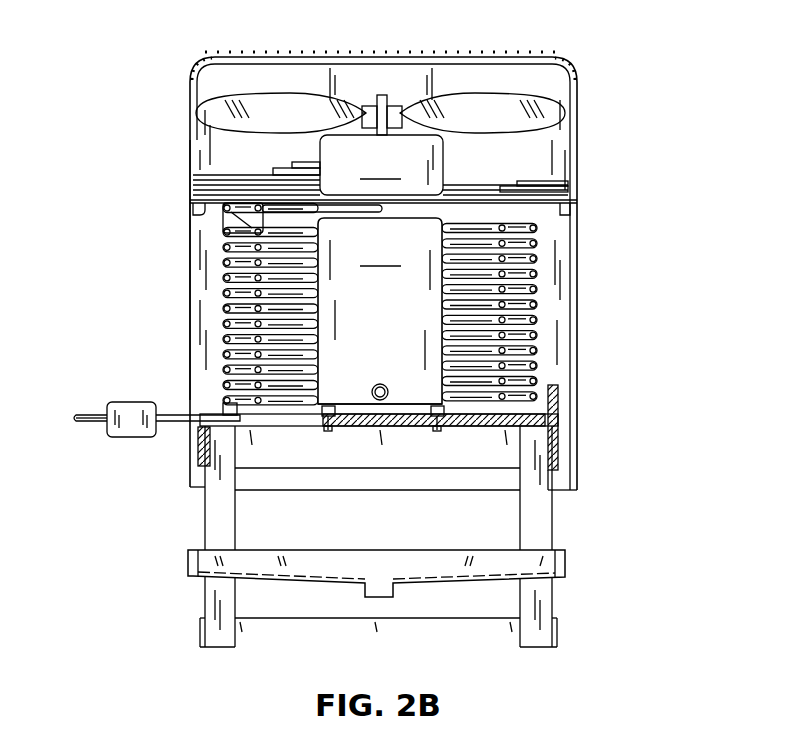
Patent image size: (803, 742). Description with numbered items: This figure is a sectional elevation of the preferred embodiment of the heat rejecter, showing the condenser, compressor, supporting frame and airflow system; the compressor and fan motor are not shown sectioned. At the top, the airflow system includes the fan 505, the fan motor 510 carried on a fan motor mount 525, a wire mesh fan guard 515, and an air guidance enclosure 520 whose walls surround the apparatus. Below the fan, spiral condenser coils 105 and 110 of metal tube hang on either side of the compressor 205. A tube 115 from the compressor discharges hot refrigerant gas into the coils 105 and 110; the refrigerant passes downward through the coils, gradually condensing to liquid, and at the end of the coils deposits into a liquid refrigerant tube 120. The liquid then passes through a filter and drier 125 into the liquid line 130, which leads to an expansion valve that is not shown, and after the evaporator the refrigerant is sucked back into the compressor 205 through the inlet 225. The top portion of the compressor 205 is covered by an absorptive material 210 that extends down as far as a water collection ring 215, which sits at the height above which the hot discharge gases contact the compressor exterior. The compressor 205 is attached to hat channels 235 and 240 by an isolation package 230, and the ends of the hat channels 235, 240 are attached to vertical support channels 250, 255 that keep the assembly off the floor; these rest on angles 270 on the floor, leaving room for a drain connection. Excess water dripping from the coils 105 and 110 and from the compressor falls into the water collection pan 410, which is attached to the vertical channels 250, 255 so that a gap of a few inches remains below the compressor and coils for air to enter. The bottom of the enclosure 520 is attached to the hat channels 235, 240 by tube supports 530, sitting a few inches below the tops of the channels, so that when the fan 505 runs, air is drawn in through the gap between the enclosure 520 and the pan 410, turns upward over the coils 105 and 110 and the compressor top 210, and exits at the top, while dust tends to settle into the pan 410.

The wire mesh fan guard 515 is at (208, 57).
The fan 505 is at (206, 103).
The fan motor 510 is at (381, 165).
The air guidance enclosure 520 is at (192, 160).
The fan motor mount 525 is at (190, 218).
The tube 115 is at (224, 226).
The coil 105 is at (480, 228).
The coil 110 is at (518, 240).
The absorptive material 210 is at (433, 203).
The water collection ring 215 is at (447, 222).
The compressor 205 is at (380, 311).
The inlet 225 is at (385, 400).
The isolation package 230 is at (543, 450).
The liquid refrigerant tube 120 is at (177, 413).
The filter and drier 125 is at (120, 400).
The liquid line 130 is at (95, 423).
The hat channel 240 is at (220, 503).
The vertical support channel 250 is at (223, 532).
The hat channel 235 is at (537, 507).
The vertical support channel 255 is at (535, 531).
The tube support 530 is at (557, 393).
The water collection pan 410 is at (565, 565).
The angle 270 is at (490, 632).